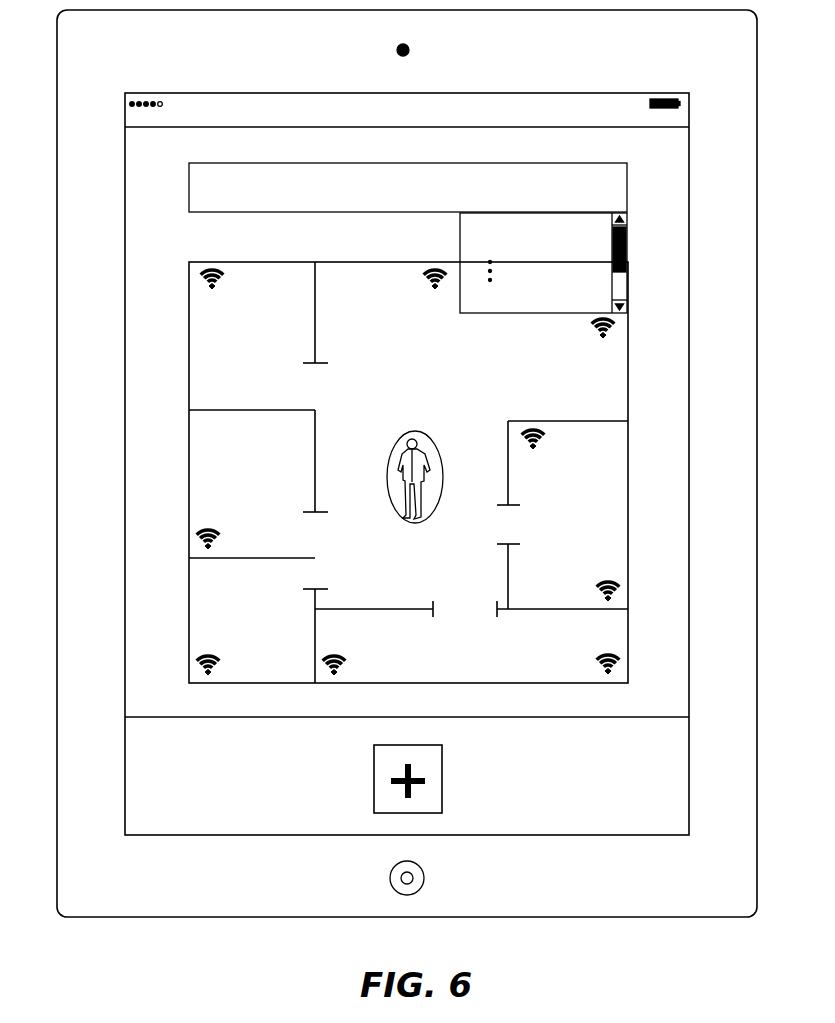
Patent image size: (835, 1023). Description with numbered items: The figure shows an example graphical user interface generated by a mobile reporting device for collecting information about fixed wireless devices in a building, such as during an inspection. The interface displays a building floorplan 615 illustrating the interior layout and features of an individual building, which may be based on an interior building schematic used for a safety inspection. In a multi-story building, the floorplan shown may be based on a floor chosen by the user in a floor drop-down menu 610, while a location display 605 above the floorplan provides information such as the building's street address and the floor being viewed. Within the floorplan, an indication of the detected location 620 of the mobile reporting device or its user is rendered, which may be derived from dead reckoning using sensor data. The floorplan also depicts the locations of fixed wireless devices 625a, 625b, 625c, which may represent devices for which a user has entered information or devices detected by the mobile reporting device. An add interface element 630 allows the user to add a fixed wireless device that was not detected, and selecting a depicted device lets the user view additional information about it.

The location display 605 is at (612, 163).
The floor drop-down menu 610 is at (587, 213).
The building floorplan 615 is at (138, 381).
The detected location 620 is at (432, 437).
The fixed wireless device 625a is at (600, 337).
The fixed wireless device 625b is at (433, 290).
The fixed wireless device 625c is at (533, 448).
The add interface element 630 is at (442, 770).